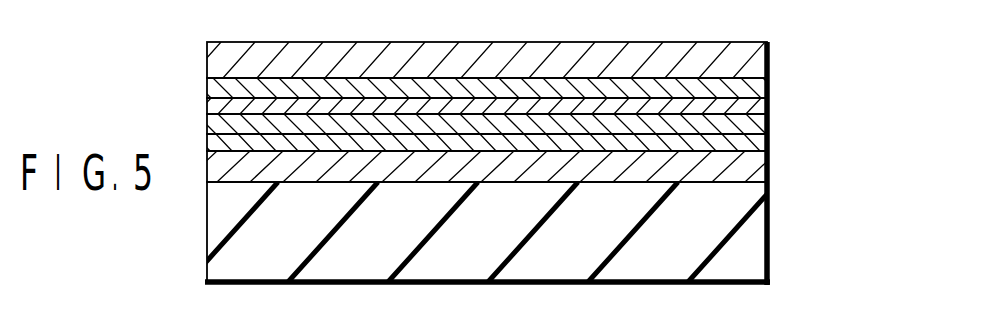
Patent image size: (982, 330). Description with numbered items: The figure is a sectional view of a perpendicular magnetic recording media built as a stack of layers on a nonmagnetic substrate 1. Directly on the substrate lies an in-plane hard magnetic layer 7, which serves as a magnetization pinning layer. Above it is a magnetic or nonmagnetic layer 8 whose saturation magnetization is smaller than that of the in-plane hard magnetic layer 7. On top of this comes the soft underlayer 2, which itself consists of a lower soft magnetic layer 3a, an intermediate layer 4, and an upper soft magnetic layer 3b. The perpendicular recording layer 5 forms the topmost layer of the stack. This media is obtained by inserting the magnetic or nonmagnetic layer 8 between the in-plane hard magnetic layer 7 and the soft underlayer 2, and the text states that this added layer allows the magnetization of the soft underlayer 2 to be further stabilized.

The nonmagnetic substrate 1 is at (757, 255).
The soft underlayer 2 is at (539, 108).
The soft magnetic layer 3a is at (513, 136).
The soft magnetic layer 3b is at (770, 87).
The intermediate layer 4 is at (770, 108).
The perpendicular recording layer 5 is at (770, 66).
The in-plane hard magnetic layer 7 is at (769, 182).
The magnetic or nonmagnetic layer 8 is at (770, 160).